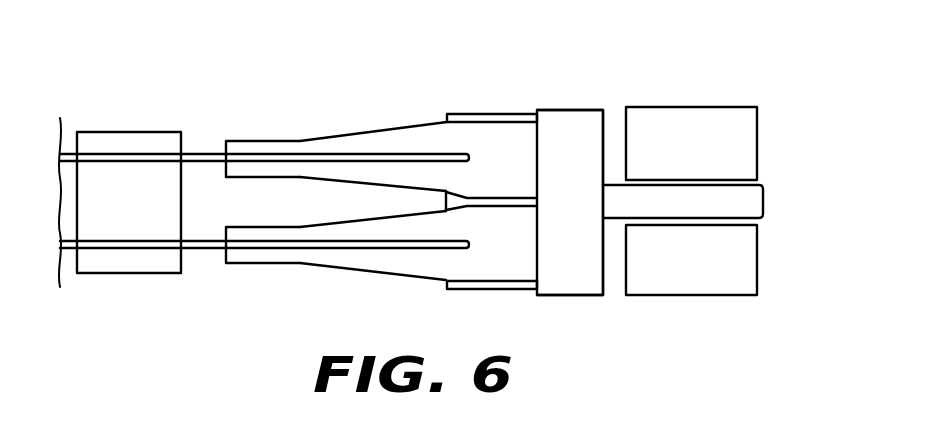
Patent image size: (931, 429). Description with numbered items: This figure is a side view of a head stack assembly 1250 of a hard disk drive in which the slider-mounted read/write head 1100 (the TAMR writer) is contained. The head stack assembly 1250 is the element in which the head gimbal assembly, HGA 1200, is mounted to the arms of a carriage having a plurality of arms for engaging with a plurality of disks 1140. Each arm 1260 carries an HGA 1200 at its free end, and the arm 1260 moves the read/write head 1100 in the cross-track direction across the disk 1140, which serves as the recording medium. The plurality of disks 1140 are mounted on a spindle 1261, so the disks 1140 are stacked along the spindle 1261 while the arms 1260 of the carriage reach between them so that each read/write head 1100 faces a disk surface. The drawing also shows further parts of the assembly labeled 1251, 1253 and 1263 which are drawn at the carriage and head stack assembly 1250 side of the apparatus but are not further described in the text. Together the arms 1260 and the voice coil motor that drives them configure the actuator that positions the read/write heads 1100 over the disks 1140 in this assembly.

The read/write head 1100 is at (226, 141).
The disk 1140 is at (196, 153).
The head gimbal assembly 1200 is at (319, 143).
The head stack assembly 1250 is at (577, 85).
The connector block 1251 is at (571, 282).
The connector pin 1253 is at (752, 200).
The arm 1260 is at (455, 114).
The spindle 1261 is at (118, 147).
The connector block 1263 is at (692, 120).